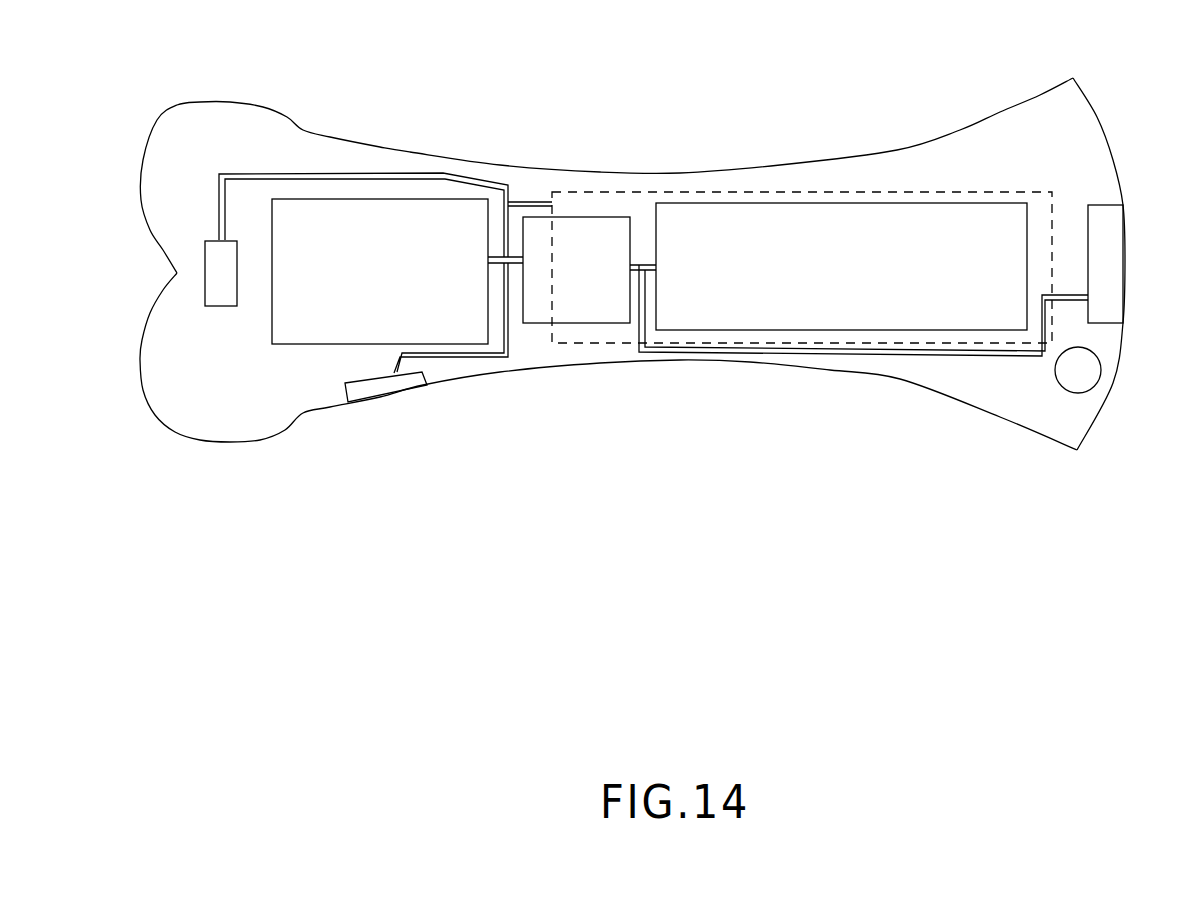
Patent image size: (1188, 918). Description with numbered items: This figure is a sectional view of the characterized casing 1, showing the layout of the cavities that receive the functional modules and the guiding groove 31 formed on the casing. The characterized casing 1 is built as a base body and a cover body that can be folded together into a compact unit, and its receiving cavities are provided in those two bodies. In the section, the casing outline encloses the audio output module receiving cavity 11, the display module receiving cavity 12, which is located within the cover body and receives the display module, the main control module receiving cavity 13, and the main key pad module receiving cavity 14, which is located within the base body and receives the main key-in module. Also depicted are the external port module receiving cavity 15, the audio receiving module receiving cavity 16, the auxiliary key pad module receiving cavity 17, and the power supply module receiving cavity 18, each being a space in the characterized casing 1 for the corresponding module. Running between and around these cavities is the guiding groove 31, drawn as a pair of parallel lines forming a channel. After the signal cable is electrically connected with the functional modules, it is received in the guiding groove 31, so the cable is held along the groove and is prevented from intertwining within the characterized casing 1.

The characterized casing 1 is at (190, 128).
The audio output module receiving cavity 11 is at (222, 300).
The display module receiving cavity 12 is at (383, 218).
The main control module receiving cavity 13 is at (592, 240).
The main key pad module receiving cavity 14 is at (855, 225).
The external port module receiving cavity 15 is at (1105, 222).
The audio receiving module receiving cavity 16 is at (1075, 378).
The auxiliary key pad module receiving cavity 17 is at (377, 390).
The power supply module receiving cavity 18 is at (729, 190).
The guiding groove 31 is at (312, 174).